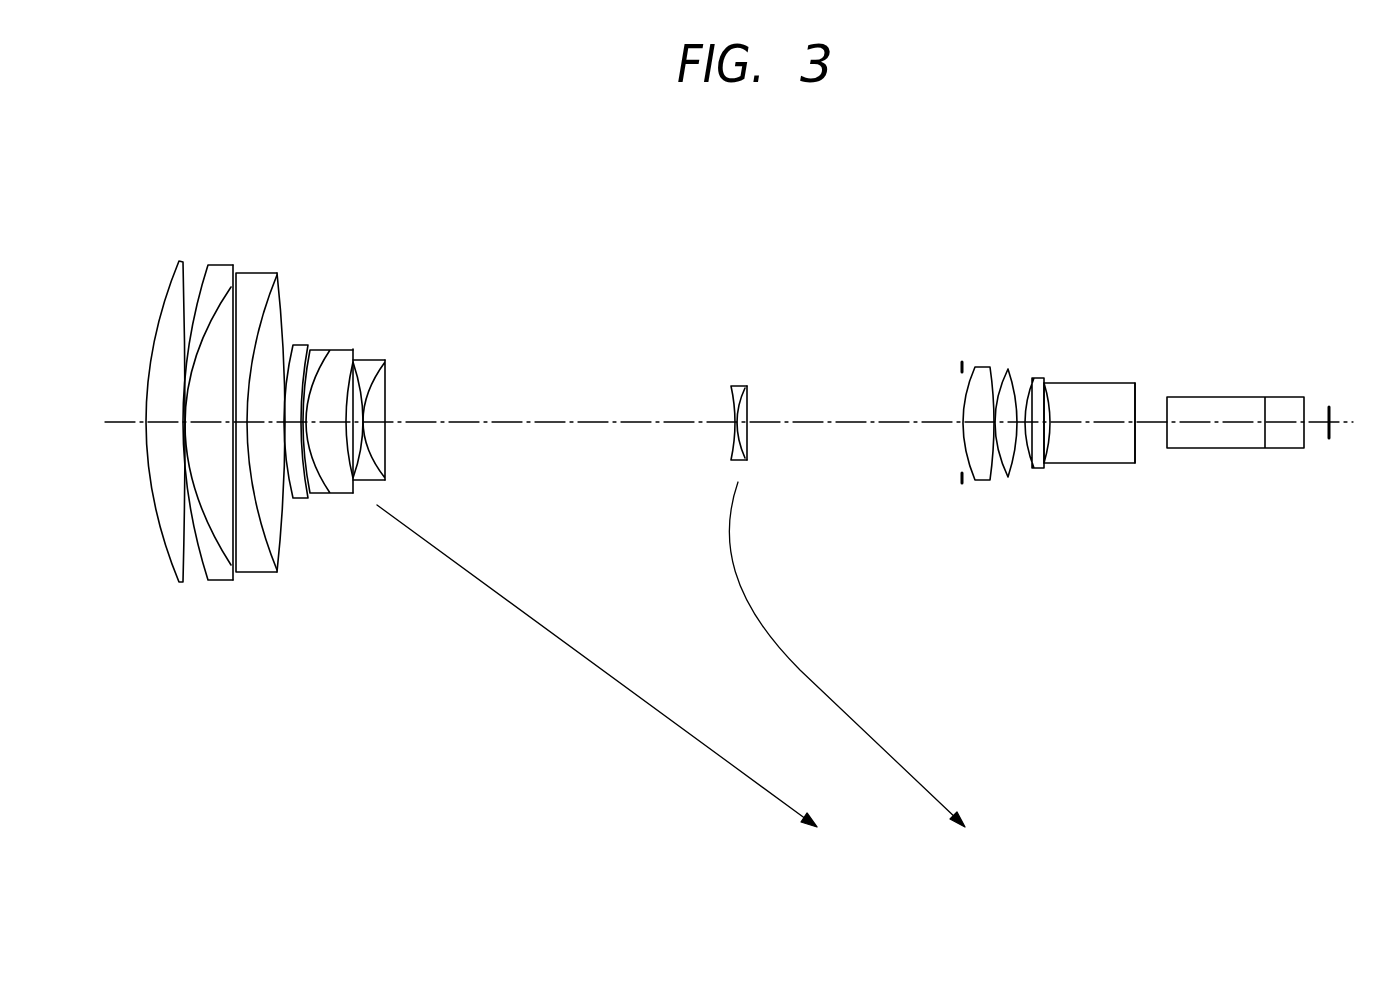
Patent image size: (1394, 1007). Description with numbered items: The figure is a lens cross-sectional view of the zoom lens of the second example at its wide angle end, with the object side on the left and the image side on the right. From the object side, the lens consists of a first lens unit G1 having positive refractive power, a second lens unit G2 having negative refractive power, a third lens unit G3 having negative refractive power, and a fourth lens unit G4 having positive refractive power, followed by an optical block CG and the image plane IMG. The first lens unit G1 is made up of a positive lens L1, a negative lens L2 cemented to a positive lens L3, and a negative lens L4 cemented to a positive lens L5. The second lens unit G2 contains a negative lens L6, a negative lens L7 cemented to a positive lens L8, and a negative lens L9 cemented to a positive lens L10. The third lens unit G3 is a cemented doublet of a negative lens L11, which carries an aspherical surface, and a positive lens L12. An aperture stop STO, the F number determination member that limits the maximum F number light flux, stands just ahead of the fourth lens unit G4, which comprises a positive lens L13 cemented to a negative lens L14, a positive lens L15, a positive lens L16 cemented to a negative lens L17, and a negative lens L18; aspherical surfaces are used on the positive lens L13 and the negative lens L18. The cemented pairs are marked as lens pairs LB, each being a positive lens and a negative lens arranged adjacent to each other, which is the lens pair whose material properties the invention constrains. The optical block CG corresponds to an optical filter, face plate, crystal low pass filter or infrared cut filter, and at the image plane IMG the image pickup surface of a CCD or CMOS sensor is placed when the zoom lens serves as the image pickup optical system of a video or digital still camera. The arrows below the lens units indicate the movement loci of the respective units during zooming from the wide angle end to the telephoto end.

The first lens unit G1 is at (340, 92).
The second lens unit G2 is at (452, 710).
The third lens unit G3 is at (805, 255).
The fourth lens unit G4 is at (1258, 638).
The lens pair LB is at (235, 148).
The positive lens L1 is at (165, 307).
The negative lens L2 is at (215, 272).
The positive lens L3 is at (225, 312).
The negative lens L4 is at (256, 283).
The positive lens L5 is at (273, 318).
The negative lens L6 is at (297, 488).
The negative lens L7 is at (310, 487).
The positive lens L8 is at (337, 468).
The negative lens L9 is at (357, 483).
The positive lens L10 is at (377, 490).
The negative lens L11 is at (738, 390).
The positive lens L12 is at (745, 400).
The positive lens L13 is at (975, 457).
The negative lens L14 is at (990, 467).
The positive lens L15 is at (1010, 447).
The positive lens L16 is at (1033, 435).
The negative lens L17 is at (1040, 388).
The negative lens L18 is at (1123, 443).
The aperture stop STO is at (960, 365).
The optical block CG is at (1275, 405).
The image plane IMG is at (1330, 415).